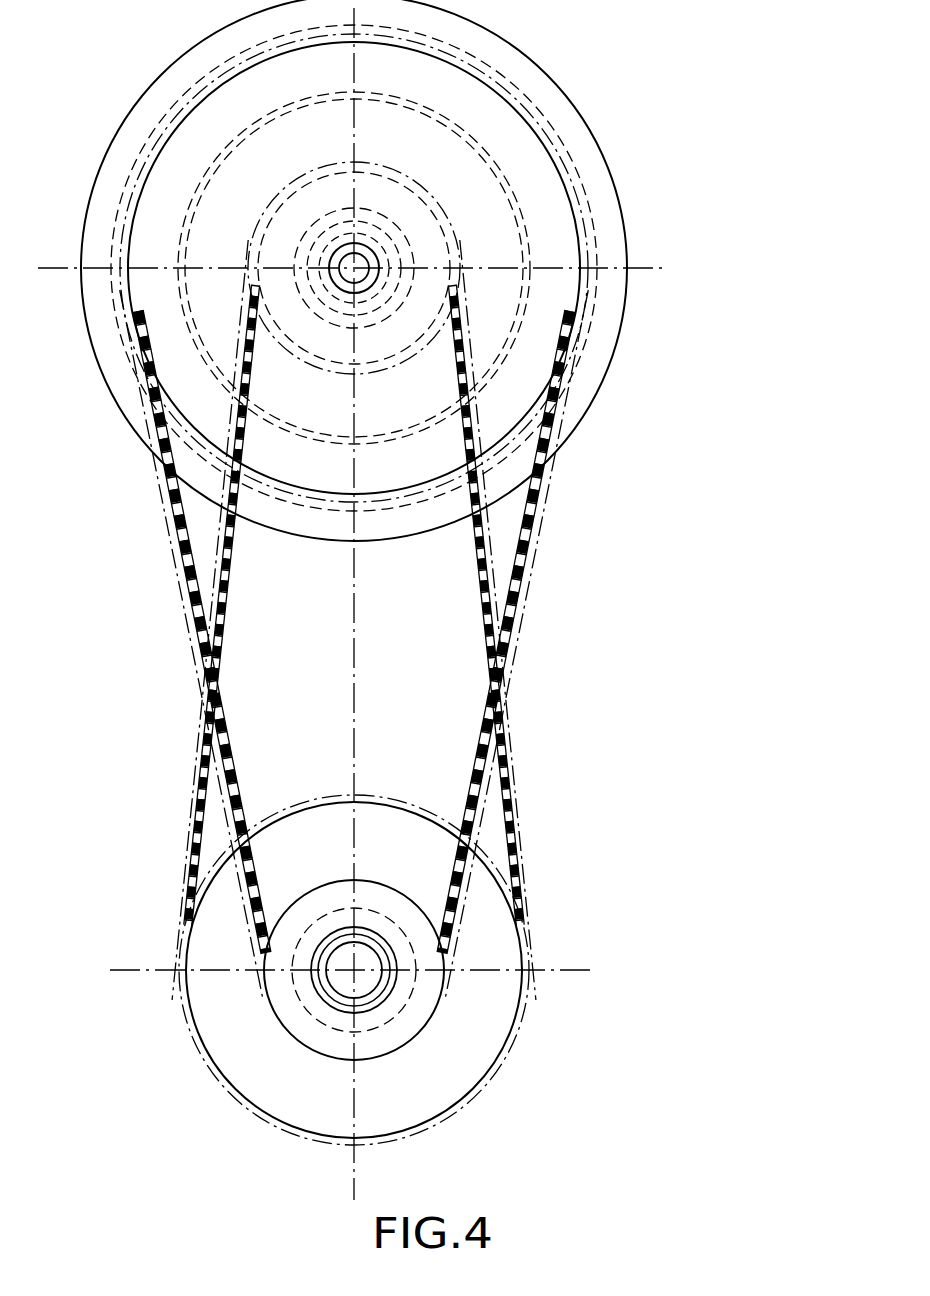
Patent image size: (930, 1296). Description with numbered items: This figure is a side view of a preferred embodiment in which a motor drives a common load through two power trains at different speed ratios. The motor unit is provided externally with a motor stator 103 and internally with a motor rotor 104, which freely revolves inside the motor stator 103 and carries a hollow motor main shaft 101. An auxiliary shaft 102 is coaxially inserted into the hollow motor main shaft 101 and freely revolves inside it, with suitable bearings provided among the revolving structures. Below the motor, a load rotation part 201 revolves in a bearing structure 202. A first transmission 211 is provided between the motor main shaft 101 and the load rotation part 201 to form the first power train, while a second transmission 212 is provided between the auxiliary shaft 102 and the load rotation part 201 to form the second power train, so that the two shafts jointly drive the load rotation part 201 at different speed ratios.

The hollow motor main shaft 101 is at (390, 249).
The auxiliary shaft 102 is at (362, 272).
The motor stator 103 is at (510, 83).
The motor rotor 104 is at (498, 210).
The load rotation part 201 is at (377, 935).
The bearing structure 202 is at (368, 978).
The first transmission 211 is at (513, 743).
The second transmission 212 is at (535, 571).